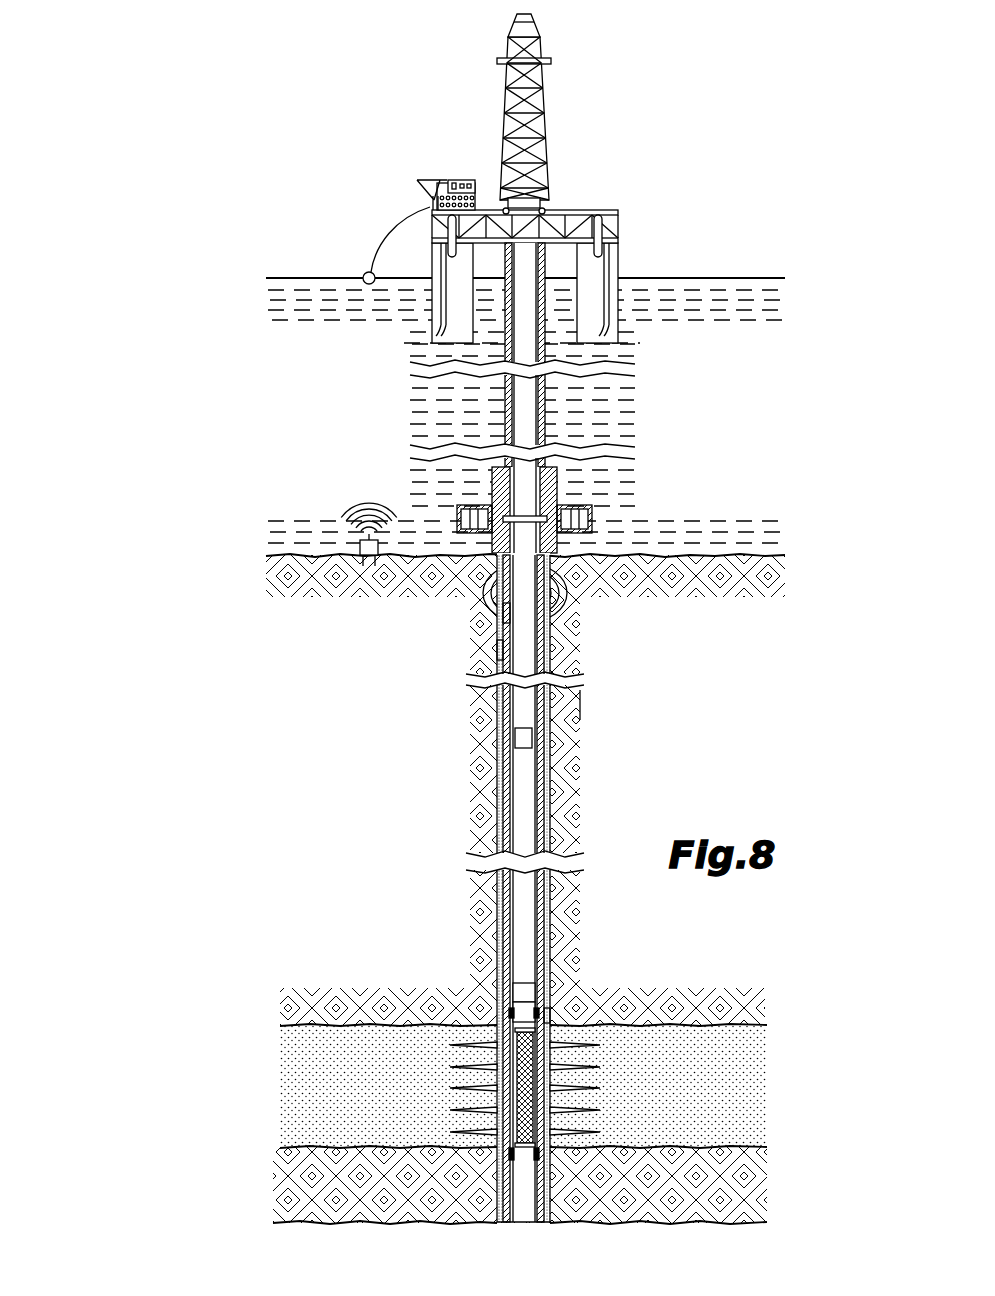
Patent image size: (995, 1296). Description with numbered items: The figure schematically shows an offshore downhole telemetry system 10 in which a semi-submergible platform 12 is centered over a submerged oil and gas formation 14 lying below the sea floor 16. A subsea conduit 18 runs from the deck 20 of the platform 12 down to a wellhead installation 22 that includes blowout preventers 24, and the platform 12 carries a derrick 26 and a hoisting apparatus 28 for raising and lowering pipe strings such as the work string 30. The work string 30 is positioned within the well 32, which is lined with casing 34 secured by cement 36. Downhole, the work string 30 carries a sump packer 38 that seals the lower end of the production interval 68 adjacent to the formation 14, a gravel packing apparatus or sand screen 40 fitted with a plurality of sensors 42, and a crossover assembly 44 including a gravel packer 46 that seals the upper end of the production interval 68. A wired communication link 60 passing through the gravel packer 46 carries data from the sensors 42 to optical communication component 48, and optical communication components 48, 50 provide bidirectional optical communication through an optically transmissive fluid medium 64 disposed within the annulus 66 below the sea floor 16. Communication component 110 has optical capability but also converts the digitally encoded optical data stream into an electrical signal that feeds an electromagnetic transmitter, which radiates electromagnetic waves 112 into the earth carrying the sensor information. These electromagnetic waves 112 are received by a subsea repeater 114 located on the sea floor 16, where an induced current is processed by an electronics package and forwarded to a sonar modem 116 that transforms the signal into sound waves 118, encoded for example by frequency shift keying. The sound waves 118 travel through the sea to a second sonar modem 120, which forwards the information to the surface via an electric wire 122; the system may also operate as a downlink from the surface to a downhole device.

The downhole telemetry system 10 is at (630, 76).
The semi-submergible platform 12 is at (590, 210).
The oil and gas formation 14 is at (720, 1030).
The sea floor 16 is at (690, 555).
The subsea conduit 18 is at (541, 410).
The deck 20 is at (563, 240).
The wellhead installation 22 is at (560, 482).
The blowout preventers 24 is at (592, 515).
The derrick 26 is at (541, 45).
The hoisting apparatus 28 is at (505, 190).
The work string 30 is at (528, 387).
The well 32 is at (552, 830).
The casing 34 is at (546, 802).
The cement 36 is at (550, 777).
The sump packer 38 is at (548, 1150).
The gravel packing apparatus or sand screen 40 is at (582, 1130).
The sensors 42 is at (470, 1128).
The crossover assembly 44 is at (509, 1010).
The gravel packer 46 is at (550, 1020).
The optical communication component 48 is at (513, 990).
The optical communication component 50 is at (525, 738).
The wired communication link 60 is at (500, 1003).
The optically transmissive fluid medium 64 is at (565, 691).
The annulus 66 is at (497, 650).
The production interval 68 is at (545, 1075).
The communication component 110 is at (500, 612).
The electromagnetic waves 112 is at (482, 590).
The subsea repeater 114 is at (360, 547).
The sonar modem 116 is at (355, 520).
The sound waves 118 is at (369, 503).
The sonar modem 120 is at (366, 273).
The electric wire 122 is at (403, 215).